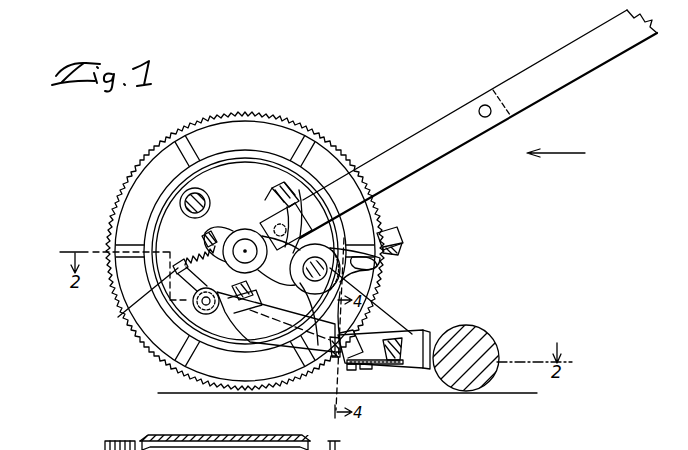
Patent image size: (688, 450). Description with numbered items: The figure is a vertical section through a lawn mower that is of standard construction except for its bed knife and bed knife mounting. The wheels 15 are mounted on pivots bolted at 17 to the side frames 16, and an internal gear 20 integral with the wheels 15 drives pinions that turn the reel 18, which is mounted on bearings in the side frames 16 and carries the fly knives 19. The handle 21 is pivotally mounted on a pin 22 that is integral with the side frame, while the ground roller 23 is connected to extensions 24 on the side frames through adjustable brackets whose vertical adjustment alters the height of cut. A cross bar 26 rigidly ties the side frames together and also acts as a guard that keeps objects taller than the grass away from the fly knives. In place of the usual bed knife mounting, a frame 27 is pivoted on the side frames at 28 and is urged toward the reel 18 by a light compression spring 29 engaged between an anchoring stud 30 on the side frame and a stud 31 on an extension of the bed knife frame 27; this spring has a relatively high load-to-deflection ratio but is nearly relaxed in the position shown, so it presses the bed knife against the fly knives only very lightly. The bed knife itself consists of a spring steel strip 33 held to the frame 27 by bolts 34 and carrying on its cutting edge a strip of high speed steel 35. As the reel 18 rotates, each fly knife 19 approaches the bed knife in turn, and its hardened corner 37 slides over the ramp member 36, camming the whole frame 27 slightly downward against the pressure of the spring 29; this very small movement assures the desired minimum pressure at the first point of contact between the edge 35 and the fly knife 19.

The wheels 15 is at (272, 118).
The side frames 16 is at (170, 214).
The wheel pivot bolt 17 is at (245, 240).
The reel 18 is at (382, 264).
The fly knives 19 is at (400, 238).
The internal gear 20 is at (150, 435).
The handle 21 is at (405, 140).
The pin 22 is at (272, 210).
The ground roller 23 is at (488, 340).
The extensions 24 is at (413, 330).
The cross bar 26 is at (190, 214).
The bed knife frame 27 is at (222, 315).
The frame pivot 28 is at (197, 310).
The compression spring 29 is at (165, 236).
The anchoring stud 30 is at (211, 231).
The stud 31 is at (157, 295).
The spring steel strip 33 is at (382, 366).
The bolts 34 is at (392, 366).
The high speed steel strip 35 is at (372, 366).
The ramp member 36 is at (332, 368).
The hardened corner 37 is at (267, 187).